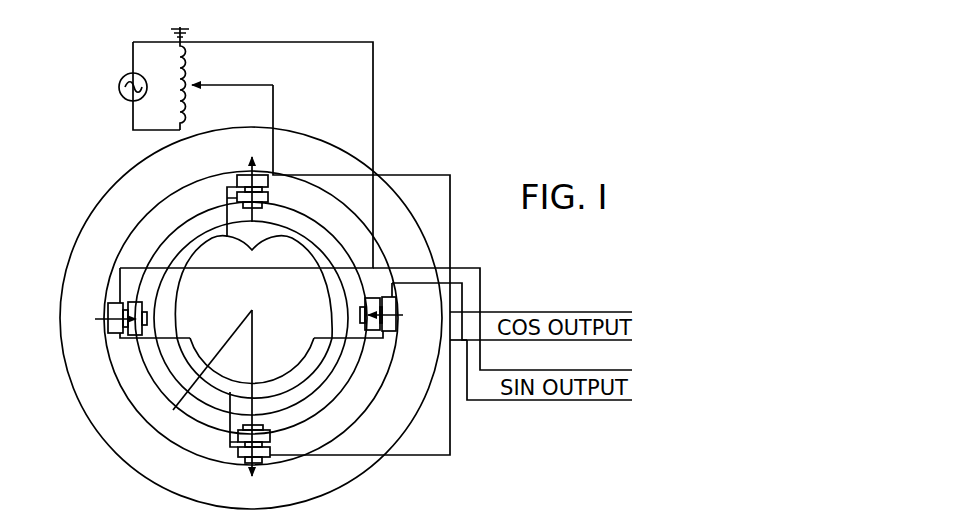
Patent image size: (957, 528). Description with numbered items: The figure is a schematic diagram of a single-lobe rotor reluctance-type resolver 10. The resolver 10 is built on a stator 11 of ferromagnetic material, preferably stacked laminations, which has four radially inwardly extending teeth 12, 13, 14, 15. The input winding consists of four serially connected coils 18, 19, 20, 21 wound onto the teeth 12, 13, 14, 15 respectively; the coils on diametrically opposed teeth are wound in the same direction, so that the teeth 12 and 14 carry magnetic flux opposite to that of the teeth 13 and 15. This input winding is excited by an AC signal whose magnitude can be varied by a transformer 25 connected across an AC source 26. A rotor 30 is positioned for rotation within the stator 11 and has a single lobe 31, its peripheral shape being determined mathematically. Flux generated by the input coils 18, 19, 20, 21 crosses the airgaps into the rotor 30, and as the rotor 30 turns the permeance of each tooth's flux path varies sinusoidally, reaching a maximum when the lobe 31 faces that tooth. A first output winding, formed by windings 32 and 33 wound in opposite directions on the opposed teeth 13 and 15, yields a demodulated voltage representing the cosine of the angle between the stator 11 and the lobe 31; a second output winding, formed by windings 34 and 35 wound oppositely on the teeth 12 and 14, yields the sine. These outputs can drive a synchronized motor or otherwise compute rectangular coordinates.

The single-lobe rotor reluctance-type resolver 10 is at (427, 137).
The stator 11 is at (104, 200).
The tooth 12 is at (108, 326).
The tooth 13 is at (262, 463).
The tooth 14 is at (392, 322).
The tooth 15 is at (258, 166).
The input winding coil 18 is at (143, 313).
The input winding coil 19 is at (270, 437).
The input winding coil 20 is at (366, 296).
The input winding coil 21 is at (268, 198).
The transformer 25 is at (172, 68).
The AC source 26 is at (118, 86).
The rotor 30 is at (303, 322).
The lobe 31 is at (296, 420).
The first output winding 32 is at (238, 458).
The first output winding 33 is at (228, 182).
The second output winding 34 is at (110, 309).
The second output winding 35 is at (388, 330).